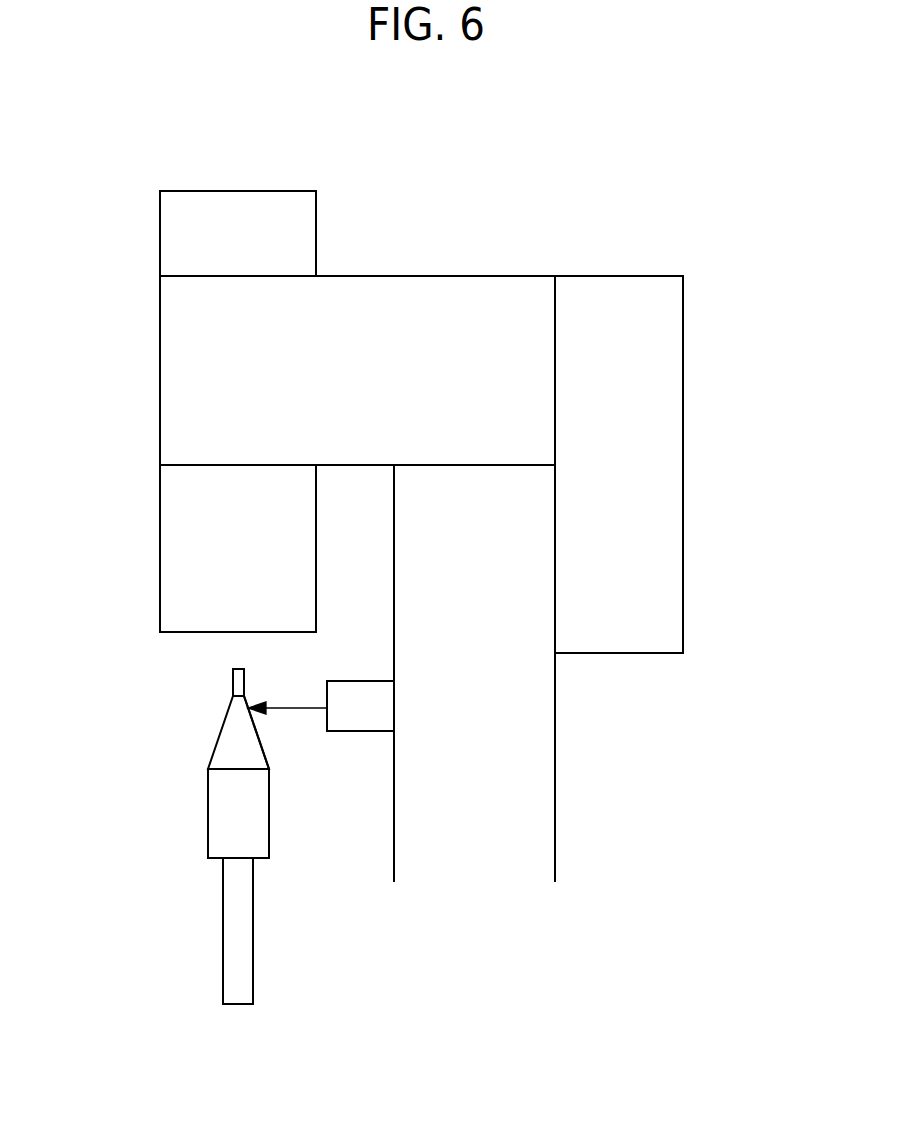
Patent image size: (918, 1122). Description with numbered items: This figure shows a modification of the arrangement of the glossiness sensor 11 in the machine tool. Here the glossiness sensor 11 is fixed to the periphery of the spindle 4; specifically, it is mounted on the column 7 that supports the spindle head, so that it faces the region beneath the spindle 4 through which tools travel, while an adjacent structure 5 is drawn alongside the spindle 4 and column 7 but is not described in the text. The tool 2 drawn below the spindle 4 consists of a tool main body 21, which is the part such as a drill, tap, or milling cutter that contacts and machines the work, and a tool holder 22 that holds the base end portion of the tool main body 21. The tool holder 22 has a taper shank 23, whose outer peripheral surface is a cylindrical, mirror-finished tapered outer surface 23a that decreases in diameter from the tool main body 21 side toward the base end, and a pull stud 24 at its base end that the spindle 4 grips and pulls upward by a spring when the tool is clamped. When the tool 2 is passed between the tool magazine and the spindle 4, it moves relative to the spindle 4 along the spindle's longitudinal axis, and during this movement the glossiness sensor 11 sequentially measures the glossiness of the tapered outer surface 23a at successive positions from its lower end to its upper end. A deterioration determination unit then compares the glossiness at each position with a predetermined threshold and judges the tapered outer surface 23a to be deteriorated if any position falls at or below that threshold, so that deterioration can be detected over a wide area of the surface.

The tool 2 is at (288, 997).
The spindle 4 is at (160, 560).
The side wall 5 is at (683, 461).
The column 7 is at (555, 767).
The glossiness sensor 11 is at (356, 681).
The tool main body 21 is at (223, 942).
The tool holder 22 is at (184, 813).
The taper shank 23 is at (233, 742).
The tapered outer surface 23a is at (268, 747).
The pull stud 24 is at (233, 676).